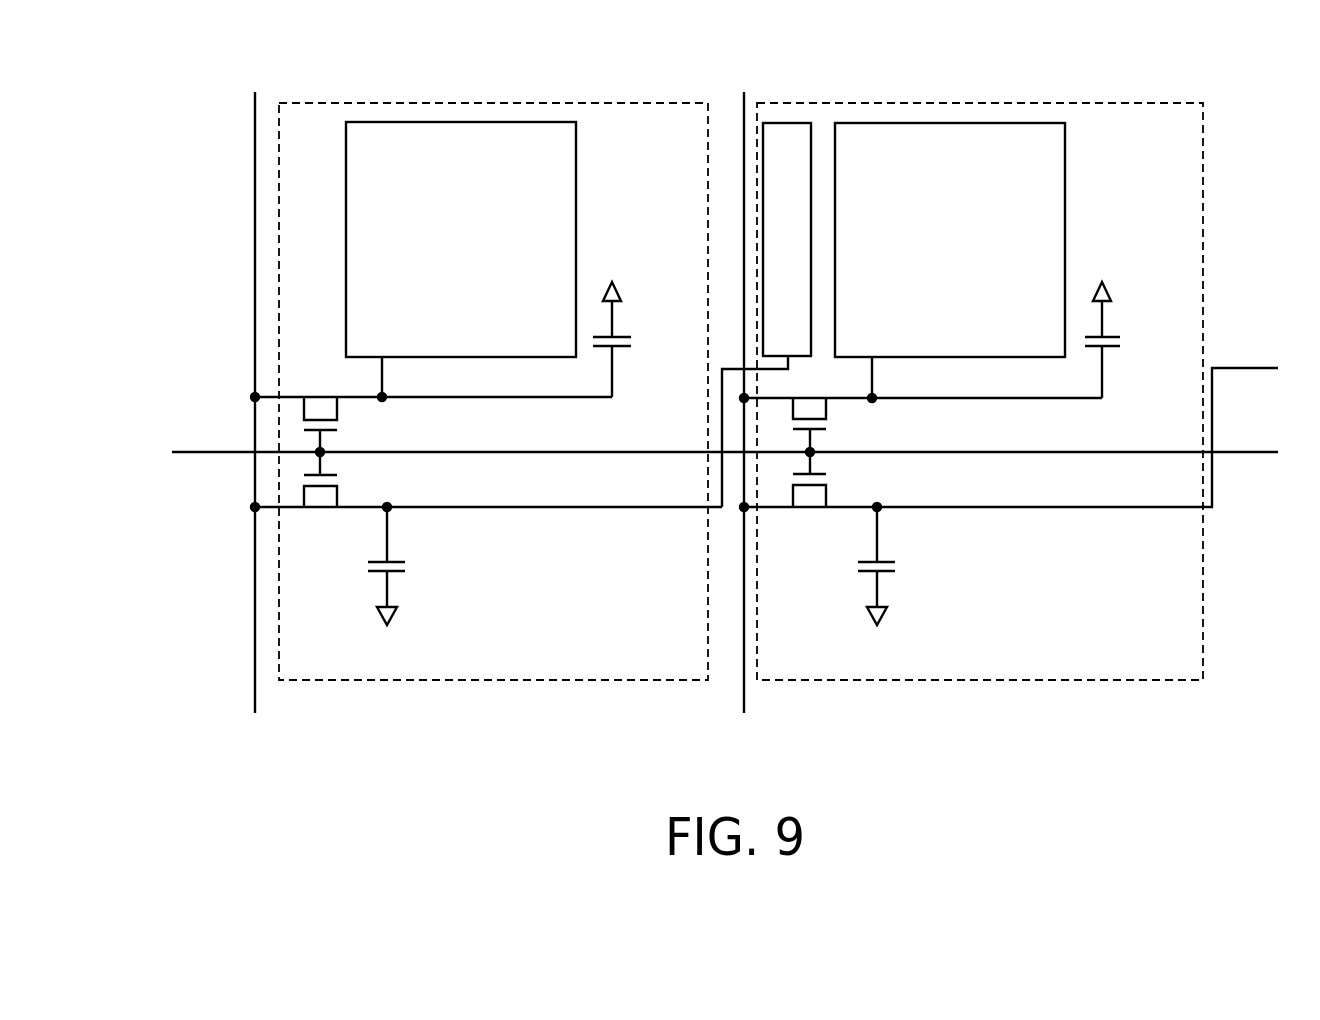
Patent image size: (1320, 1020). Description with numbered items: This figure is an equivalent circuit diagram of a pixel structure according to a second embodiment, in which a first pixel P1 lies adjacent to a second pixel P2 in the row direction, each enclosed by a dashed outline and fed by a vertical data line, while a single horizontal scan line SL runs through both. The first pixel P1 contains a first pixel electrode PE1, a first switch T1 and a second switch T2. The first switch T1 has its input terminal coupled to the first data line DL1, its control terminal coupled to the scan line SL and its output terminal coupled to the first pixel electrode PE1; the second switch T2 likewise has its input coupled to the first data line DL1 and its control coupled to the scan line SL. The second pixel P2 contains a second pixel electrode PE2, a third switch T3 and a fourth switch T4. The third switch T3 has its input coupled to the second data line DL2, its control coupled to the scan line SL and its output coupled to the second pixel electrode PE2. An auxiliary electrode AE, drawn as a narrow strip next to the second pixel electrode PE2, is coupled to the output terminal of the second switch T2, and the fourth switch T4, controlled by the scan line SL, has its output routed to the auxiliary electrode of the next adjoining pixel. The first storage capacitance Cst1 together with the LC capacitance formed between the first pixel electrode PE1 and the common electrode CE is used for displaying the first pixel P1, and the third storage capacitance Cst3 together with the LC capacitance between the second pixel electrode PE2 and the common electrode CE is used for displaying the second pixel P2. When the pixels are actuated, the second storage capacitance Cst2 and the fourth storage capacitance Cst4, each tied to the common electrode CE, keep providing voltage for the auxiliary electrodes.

The first data line DL1 is at (262, 383).
The second data line DL2 is at (751, 383).
The scan line SL is at (705, 452).
The first pixel P1 is at (488, 103).
The second pixel P2 is at (958, 103).
The first pixel electrode PE1 is at (487, 255).
The second pixel electrode PE2 is at (976, 257).
The auxiliary electrode AE is at (809, 263).
The first switch T1 is at (431, 423).
The second switch T2 is at (486, 509).
The third switch T3 is at (921, 423).
The fourth switch T4 is at (1009, 450).
The first storage capacitance Cst1 is at (641, 349).
The second storage capacitance Cst2 is at (356, 557).
The third storage capacitance Cst3 is at (1132, 349).
The fourth storage capacitance Cst4 is at (846, 557).
The common electrode CE is at (748, 454).